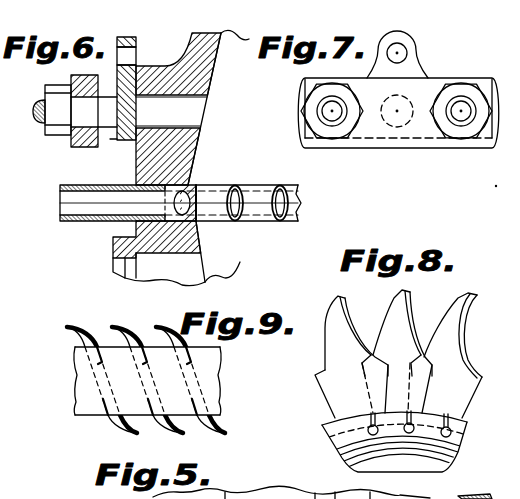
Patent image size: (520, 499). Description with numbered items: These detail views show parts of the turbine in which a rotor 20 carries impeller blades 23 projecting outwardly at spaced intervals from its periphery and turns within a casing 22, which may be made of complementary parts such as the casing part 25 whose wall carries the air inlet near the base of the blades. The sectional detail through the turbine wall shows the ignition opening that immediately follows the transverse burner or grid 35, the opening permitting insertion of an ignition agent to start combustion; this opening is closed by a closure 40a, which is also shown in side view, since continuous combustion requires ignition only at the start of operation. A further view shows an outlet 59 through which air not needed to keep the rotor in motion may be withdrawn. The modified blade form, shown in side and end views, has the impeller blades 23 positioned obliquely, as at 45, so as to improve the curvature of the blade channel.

In FIG. 9, the rotor 20 is at (77, 377).
In FIG. 6, the casing 22 is at (192, 145).
In FIG. 8, the impeller blades 23 is at (332, 328).
In FIG. 5, the casing part 25 is at (333, 497).
In FIG. 6, the grid 35 is at (238, 185).
In FIG. 6, the closure 40a is at (123, 139).
In FIG. 7, the closure 40a is at (427, 91).
In FIG. 8, the oblique blade position 45 is at (338, 345).
In FIG. 9, the oblique blade position 45 is at (198, 383).
In FIG. 6, the outlet 59 is at (198, 115).